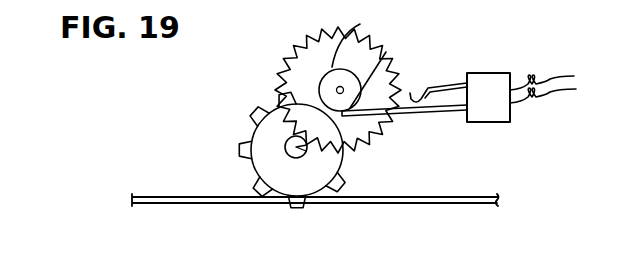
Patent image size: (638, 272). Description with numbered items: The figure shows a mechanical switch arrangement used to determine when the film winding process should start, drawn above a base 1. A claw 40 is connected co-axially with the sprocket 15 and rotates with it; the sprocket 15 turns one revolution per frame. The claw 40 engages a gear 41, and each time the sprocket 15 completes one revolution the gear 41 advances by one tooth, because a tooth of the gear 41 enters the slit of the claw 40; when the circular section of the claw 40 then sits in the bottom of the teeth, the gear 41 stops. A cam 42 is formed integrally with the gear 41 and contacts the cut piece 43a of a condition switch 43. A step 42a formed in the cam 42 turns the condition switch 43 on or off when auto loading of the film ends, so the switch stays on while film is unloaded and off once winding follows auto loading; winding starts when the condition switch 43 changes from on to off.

The base plate 1 is at (382, 204).
The sprocket 15 is at (237, 151).
The claw 40 is at (296, 143).
The gear 41 is at (306, 62).
The cam 42 is at (346, 68).
The step 42a is at (388, 55).
The condition switch 43 is at (490, 87).
The cut piece 43a is at (424, 112).